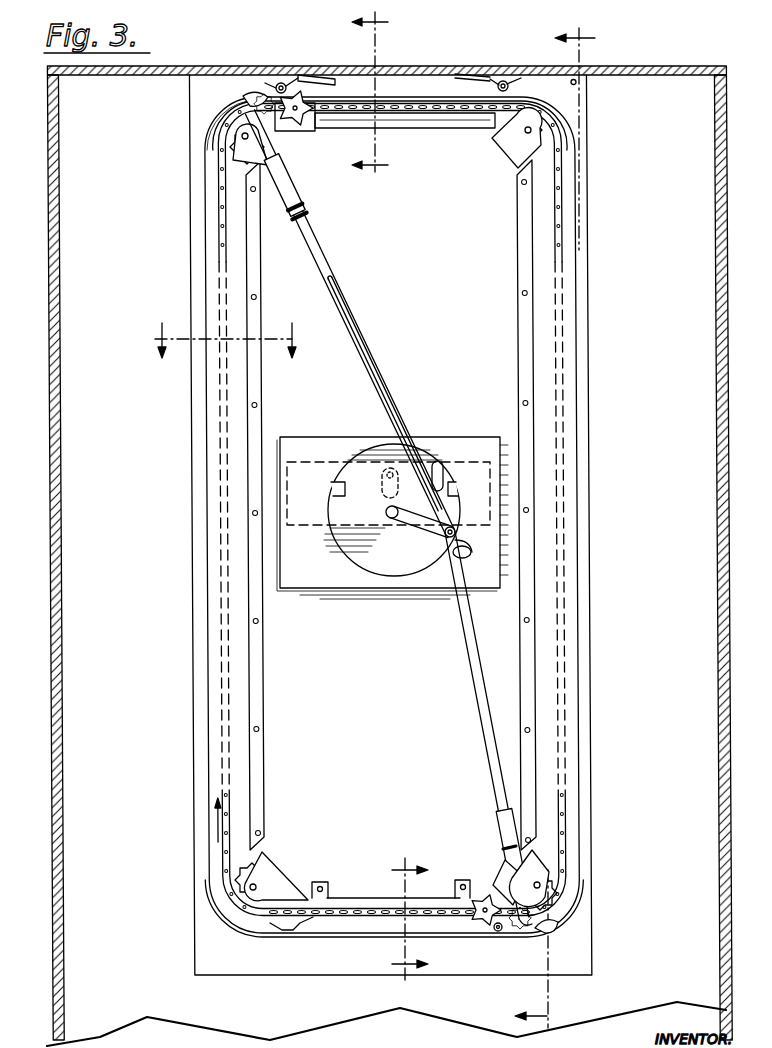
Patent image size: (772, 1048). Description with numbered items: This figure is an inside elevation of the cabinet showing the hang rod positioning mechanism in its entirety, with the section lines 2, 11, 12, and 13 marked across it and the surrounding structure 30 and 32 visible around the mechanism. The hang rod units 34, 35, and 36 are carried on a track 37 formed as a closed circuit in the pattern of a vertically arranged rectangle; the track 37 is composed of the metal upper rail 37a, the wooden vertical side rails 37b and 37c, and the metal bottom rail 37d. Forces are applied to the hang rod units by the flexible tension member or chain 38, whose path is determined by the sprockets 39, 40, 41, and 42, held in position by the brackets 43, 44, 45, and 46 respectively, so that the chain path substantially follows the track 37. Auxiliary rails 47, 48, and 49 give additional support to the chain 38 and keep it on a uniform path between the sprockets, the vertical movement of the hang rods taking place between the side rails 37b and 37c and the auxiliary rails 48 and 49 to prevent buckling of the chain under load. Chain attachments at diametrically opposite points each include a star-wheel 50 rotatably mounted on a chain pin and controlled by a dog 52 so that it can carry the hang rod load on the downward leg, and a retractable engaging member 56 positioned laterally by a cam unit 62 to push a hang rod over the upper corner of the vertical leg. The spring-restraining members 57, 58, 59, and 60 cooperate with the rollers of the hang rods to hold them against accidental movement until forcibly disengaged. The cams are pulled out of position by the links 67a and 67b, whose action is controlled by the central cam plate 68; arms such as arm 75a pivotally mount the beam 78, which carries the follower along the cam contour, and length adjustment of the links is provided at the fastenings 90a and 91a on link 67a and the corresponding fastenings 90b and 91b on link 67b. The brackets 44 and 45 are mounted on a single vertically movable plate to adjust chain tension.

The section line 2- 2 is at (544, 529).
The section line 11- 11 is at (355, 93).
The section line 12- 12 is at (226, 357).
The section line 13- 13 is at (426, 920).
The door frame 30 is at (671, 667).
The door panel 32 is at (376, 742).
The hang rod unit 34 is at (502, 931).
The hang rod unit 35 is at (281, 83).
The hang rod unit 36 is at (501, 81).
The track 37 is at (405, 95).
The upper rail 37a is at (358, 95).
The vertical side rail 37b is at (200, 452).
The vertical side rail 37c is at (652, 409).
The bottom rail 37d is at (266, 942).
The chain 38 is at (435, 113).
The sprocket 39 is at (545, 130).
The sprocket 40 is at (552, 896).
The sprocket 41 is at (240, 893).
The sprocket 42 is at (238, 120).
The bracket 43 is at (508, 150).
The bracket 44 is at (532, 862).
The bracket 45 is at (262, 867).
The bracket 46 is at (240, 143).
The auxiliary rail 47 is at (397, 122).
The auxiliary rail 48 is at (535, 272).
The auxiliary rail 49 is at (227, 270).
The star-wheel 50 is at (490, 887).
The dog 52 is at (293, 126).
The retractable engaging member 56 is at (262, 96).
The spring-restraining member 57 is at (303, 84).
The spring-restraining member 58 is at (462, 75).
The spring-restraining member 59 is at (466, 920).
The spring-restraining member 60 is at (308, 918).
The cam unit 62 is at (247, 99).
The link 67a is at (330, 258).
The link 67b is at (490, 770).
The central cam plate 68 is at (324, 440).
The arm 75a is at (417, 518).
The beam 78 is at (470, 555).
The fastening 90a is at (290, 173).
The fastening 90b is at (500, 825).
The fastening 91a is at (382, 233).
The fastening 91b is at (506, 850).